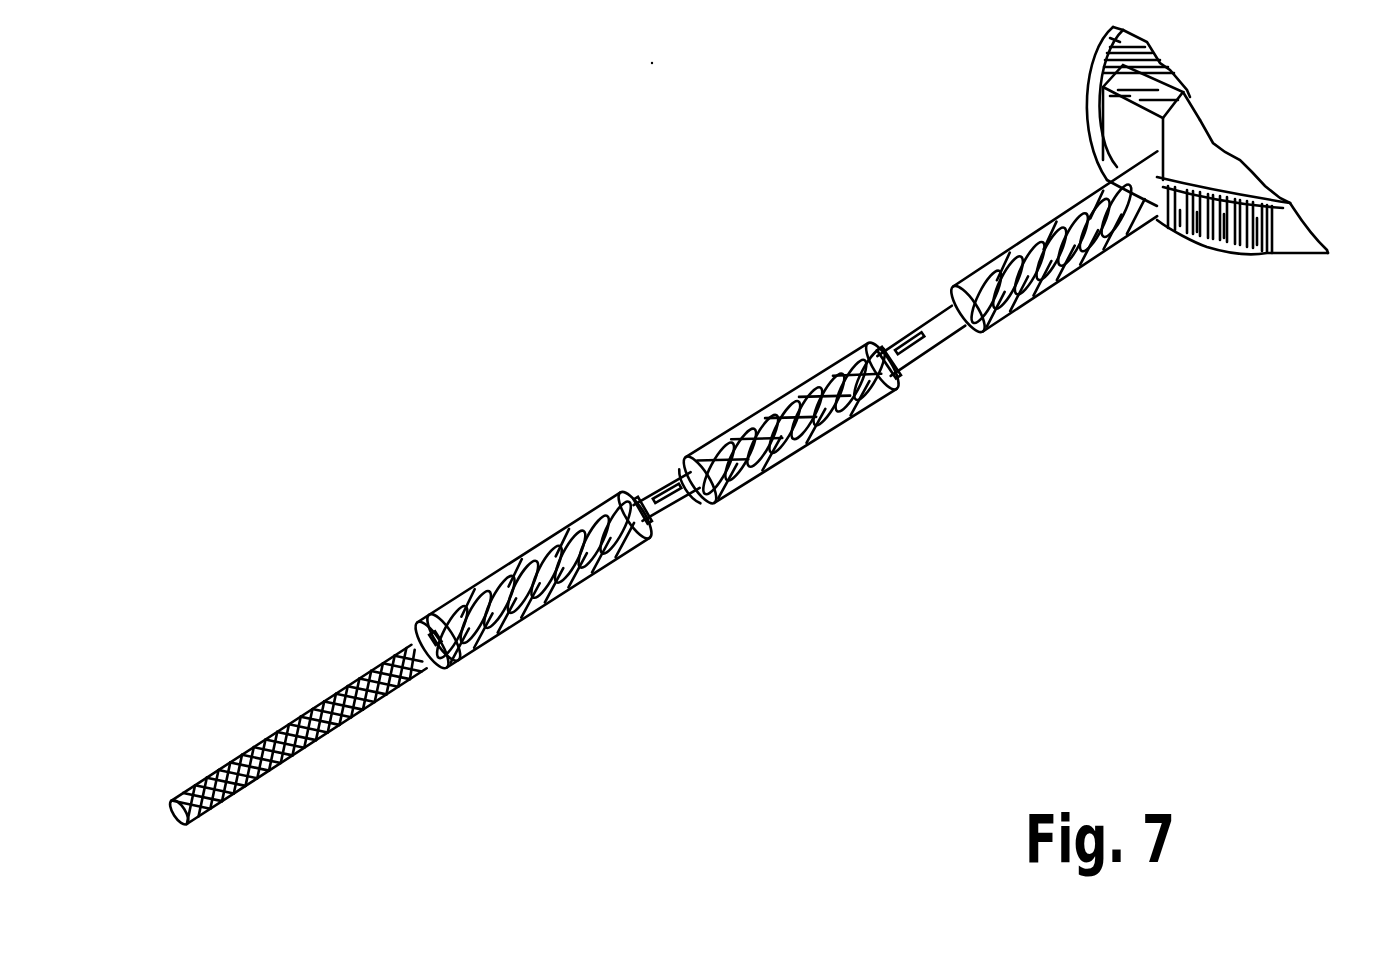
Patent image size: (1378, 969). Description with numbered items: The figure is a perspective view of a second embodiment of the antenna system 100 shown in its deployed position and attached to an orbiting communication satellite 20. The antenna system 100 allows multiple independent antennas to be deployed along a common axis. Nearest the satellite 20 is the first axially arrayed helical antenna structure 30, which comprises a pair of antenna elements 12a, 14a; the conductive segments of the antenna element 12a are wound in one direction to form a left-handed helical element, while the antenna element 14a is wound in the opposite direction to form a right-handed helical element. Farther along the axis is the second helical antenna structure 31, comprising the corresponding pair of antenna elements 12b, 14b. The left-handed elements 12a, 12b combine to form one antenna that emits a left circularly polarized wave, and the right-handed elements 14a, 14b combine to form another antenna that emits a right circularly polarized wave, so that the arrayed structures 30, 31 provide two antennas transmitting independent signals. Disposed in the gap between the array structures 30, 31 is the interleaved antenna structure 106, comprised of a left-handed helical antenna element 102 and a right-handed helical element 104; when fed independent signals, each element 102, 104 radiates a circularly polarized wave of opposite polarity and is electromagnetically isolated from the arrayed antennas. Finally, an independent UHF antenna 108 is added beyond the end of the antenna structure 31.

The antenna system 100 is at (878, 180).
The UHF antenna 108 is at (263, 776).
The antenna element 12b is at (467, 595).
The antenna element 14b is at (561, 598).
The helical antenna structure 31 is at (548, 603).
The left handed helical antenna element 102 is at (693, 446).
The right handed helical element 104 is at (807, 364).
The antenna structure 106 is at (763, 466).
The antenna element 12a is at (962, 268).
The antenna element 14a is at (1060, 270).
The helical antenna structure 30 is at (1070, 273).
The orbiting communication satellite 20 is at (1087, 108).